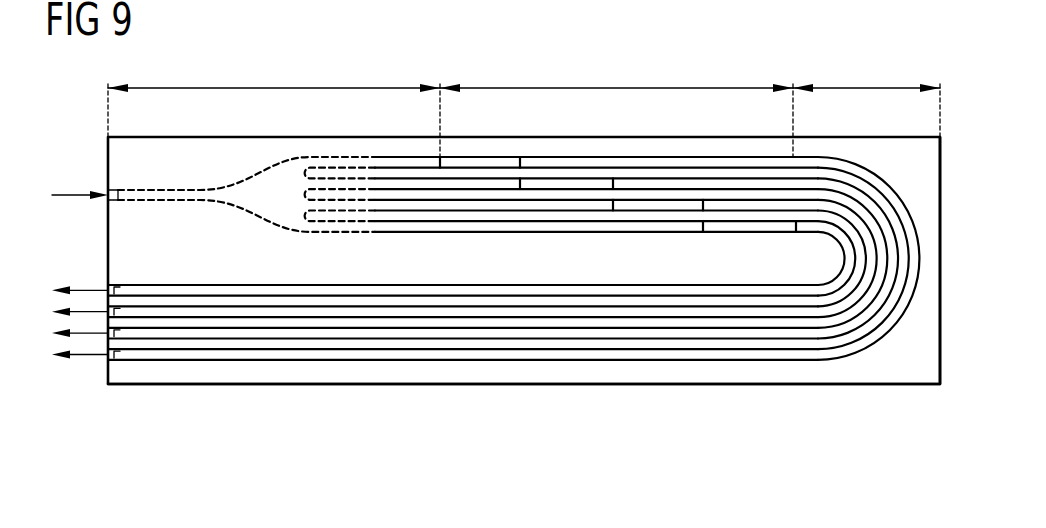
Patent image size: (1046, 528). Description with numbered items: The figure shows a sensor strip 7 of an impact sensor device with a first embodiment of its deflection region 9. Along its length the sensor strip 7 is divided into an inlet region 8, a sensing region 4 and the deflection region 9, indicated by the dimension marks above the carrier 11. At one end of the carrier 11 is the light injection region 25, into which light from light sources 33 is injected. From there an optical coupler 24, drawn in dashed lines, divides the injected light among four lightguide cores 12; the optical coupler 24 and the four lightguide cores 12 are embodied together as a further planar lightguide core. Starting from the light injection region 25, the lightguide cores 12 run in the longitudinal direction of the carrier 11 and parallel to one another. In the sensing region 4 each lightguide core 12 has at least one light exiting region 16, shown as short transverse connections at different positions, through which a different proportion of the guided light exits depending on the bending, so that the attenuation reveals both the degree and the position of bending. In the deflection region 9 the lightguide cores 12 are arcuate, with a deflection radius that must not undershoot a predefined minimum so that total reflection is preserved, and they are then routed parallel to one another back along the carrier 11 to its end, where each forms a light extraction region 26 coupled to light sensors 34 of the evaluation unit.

The sensor strip 7 is at (766, 396).
The carrier 11 is at (887, 372).
The lightguide cores 12 is at (318, 358).
The light exiting region 16 is at (478, 162).
The optical coupler 24 is at (262, 211).
The light injection region 25 is at (108, 191).
The light sources 33 is at (120, 190).
The light extraction region 26 is at (106, 292).
The light sensors 34 is at (125, 310).
The inlet region 8 is at (274, 106).
The sensing region 4 is at (616, 106).
The deflection region 9 is at (866, 96).